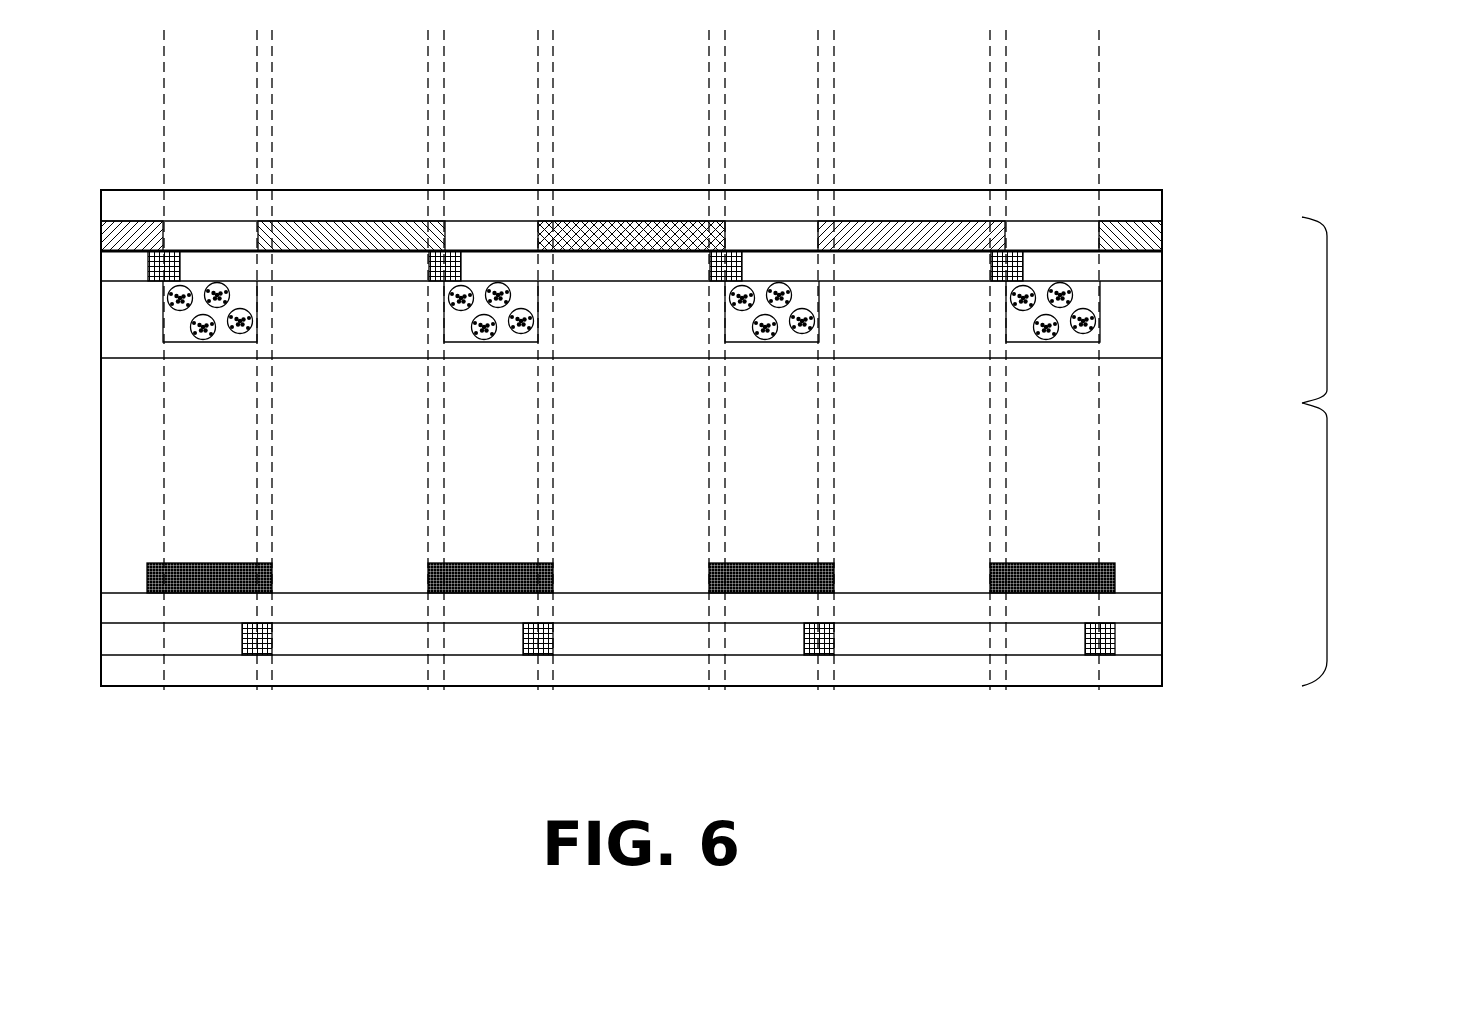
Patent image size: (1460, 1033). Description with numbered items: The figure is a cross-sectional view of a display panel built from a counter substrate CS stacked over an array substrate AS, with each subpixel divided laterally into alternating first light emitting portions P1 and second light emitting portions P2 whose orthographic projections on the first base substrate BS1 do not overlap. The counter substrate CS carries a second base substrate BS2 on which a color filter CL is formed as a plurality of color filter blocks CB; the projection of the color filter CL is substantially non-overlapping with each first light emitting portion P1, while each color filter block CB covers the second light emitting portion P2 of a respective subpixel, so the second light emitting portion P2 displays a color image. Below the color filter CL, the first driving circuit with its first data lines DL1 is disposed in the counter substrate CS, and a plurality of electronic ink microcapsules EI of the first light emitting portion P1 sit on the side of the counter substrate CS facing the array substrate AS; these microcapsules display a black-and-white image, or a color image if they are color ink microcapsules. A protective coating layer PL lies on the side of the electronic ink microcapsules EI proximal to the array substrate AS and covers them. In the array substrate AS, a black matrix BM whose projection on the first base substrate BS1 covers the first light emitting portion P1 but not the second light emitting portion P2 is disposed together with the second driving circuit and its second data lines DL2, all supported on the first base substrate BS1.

The first light emitting portion P1 is at (631, 360).
The second light emitting portion P2 is at (631, 360).
The second base substrate BS2 is at (632, 206).
The color filter CL is at (1147, 235).
The color filter block CB is at (308, 236).
The first data line DL1 is at (173, 252).
The protective coating layer PL is at (1145, 332).
The electronic ink microcapsule EI is at (497, 334).
The black matrix BM is at (213, 562).
The second data line DL2 is at (258, 650).
The first base substrate BS1 is at (632, 672).
The counter substrate CS is at (1327, 312).
The array substrate AS is at (1327, 545).